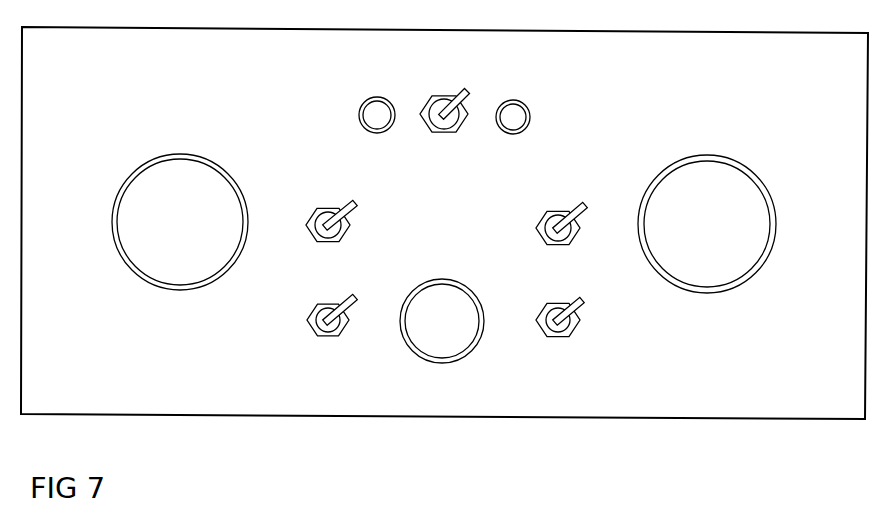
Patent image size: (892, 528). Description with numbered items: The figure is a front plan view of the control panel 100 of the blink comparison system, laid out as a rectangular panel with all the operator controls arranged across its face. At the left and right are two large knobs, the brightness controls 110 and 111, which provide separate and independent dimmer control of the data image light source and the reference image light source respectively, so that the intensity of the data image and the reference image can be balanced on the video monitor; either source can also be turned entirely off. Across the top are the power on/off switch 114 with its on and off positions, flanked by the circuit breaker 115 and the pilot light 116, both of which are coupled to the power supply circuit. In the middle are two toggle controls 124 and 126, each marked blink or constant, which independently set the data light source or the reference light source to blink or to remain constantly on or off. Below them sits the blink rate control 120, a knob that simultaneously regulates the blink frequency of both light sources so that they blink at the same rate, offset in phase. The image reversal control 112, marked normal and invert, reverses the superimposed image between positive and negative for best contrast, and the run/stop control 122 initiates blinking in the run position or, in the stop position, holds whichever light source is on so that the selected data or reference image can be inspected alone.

The control panel 100 is at (720, 418).
The brightness control 110 is at (113, 212).
The brightness control 111 is at (777, 218).
The image reversal control 112 is at (308, 318).
The power on/off switch 114 is at (458, 126).
The circuit breaker 115 is at (366, 117).
The pilot light 116 is at (529, 121).
The blink rate control 120 is at (408, 346).
The run/stop control 122 is at (580, 327).
The blink/constant control 124 is at (356, 219).
The blink/constant control 126 is at (540, 226).